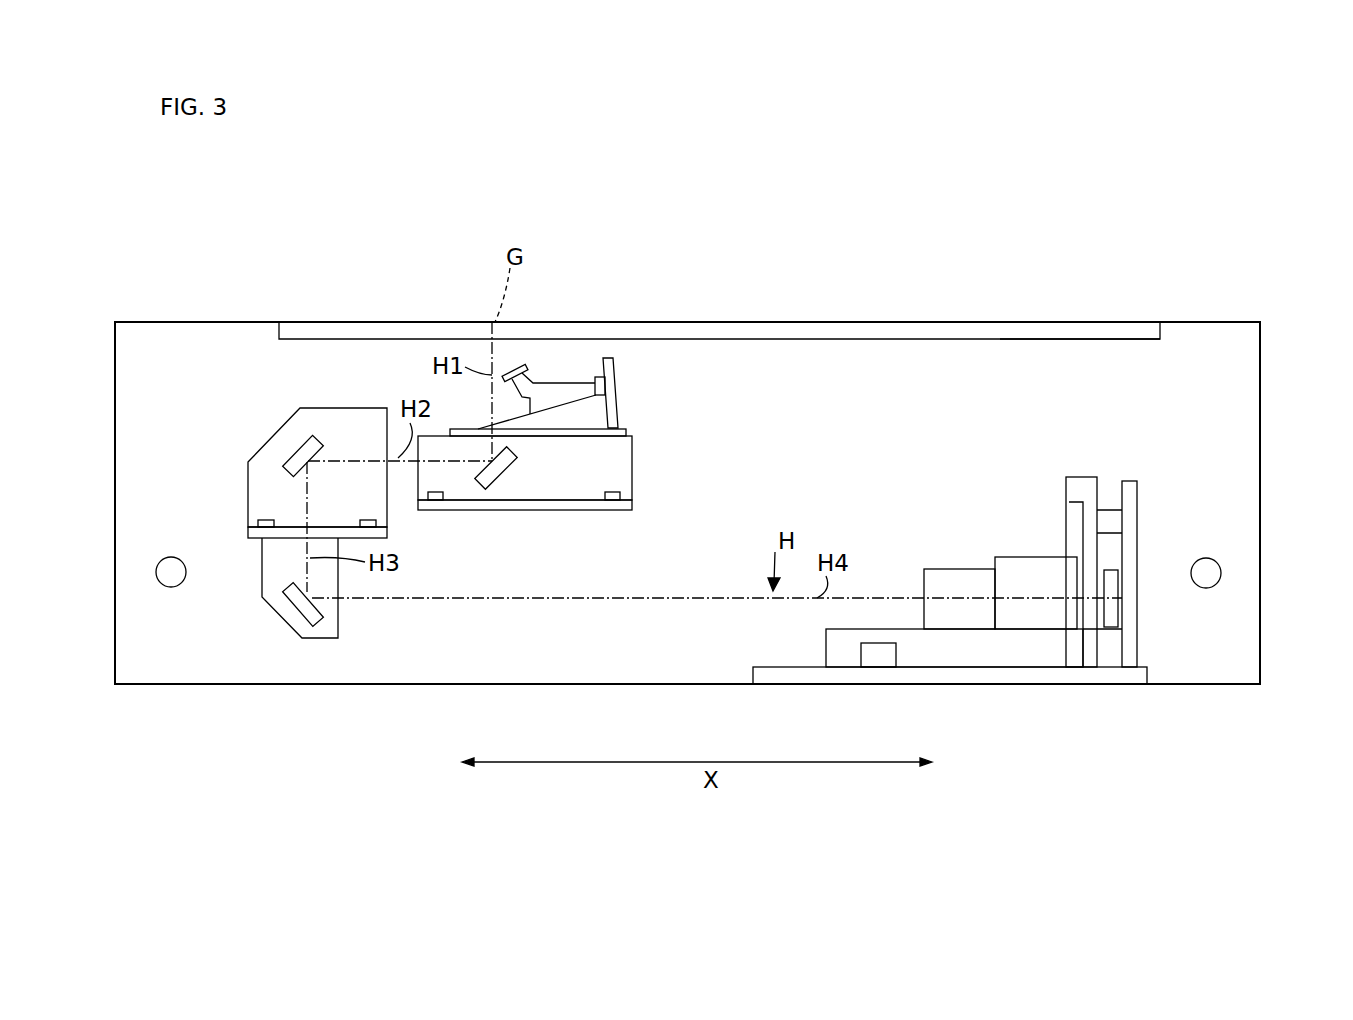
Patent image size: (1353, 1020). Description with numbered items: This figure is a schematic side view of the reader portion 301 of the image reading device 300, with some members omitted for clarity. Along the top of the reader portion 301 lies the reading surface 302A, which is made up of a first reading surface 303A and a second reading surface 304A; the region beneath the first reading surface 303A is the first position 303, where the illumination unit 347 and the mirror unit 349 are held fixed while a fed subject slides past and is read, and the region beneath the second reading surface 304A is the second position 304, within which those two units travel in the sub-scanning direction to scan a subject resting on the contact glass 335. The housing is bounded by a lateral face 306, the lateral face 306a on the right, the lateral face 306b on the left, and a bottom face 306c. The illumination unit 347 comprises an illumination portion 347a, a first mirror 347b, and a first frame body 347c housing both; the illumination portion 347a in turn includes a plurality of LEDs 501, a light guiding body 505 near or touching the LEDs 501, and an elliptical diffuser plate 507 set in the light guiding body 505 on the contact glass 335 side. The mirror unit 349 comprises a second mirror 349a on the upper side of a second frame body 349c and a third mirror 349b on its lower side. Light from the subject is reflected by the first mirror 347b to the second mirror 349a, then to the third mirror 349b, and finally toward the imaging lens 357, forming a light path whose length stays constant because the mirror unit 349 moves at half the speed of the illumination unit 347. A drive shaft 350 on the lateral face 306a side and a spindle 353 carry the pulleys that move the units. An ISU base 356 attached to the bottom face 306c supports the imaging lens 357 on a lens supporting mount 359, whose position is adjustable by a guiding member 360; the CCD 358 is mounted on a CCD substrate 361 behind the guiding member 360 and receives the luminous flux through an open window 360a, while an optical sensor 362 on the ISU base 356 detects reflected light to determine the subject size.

The image reading device 300 is at (1266, 248).
The reader portion 301 is at (1262, 368).
The reading surface 302A is at (778, 322).
The first position 303 is at (295, 335).
The first reading surface 303A is at (380, 322).
The second position 304 is at (1014, 365).
The second reading surface 304A is at (938, 322).
The lateral face 306 is at (1194, 322).
The lateral face 306a is at (1262, 483).
The lateral face 306b is at (115, 476).
The bottom face 306c is at (632, 684).
The contact glass 335 is at (1097, 332).
The illumination unit 347 is at (584, 412).
The illumination portion 347a is at (604, 354).
The first mirror 347b is at (498, 488).
The first frame body 347c is at (632, 472).
The mirror unit 349 is at (271, 461).
The second mirror 349a is at (312, 438).
The third mirror 349b is at (290, 597).
The second frame body 349c is at (248, 494).
The drive shaft 350 is at (1208, 575).
The spindle 353 is at (168, 574).
The ISU base 356 is at (777, 684).
The imaging lens 357 is at (938, 569).
The CCD 358 is at (1115, 620).
The lens supporting mount 359 is at (845, 660).
The guiding member 360 is at (1044, 548).
The open window 360a is at (1031, 578).
The CCD substrate 361 is at (1128, 481).
The optical sensor 362 is at (880, 665).
The LEDs 501 is at (612, 380).
The light guiding body 505 is at (555, 390).
The elliptical diffuser plate 507 is at (520, 365).